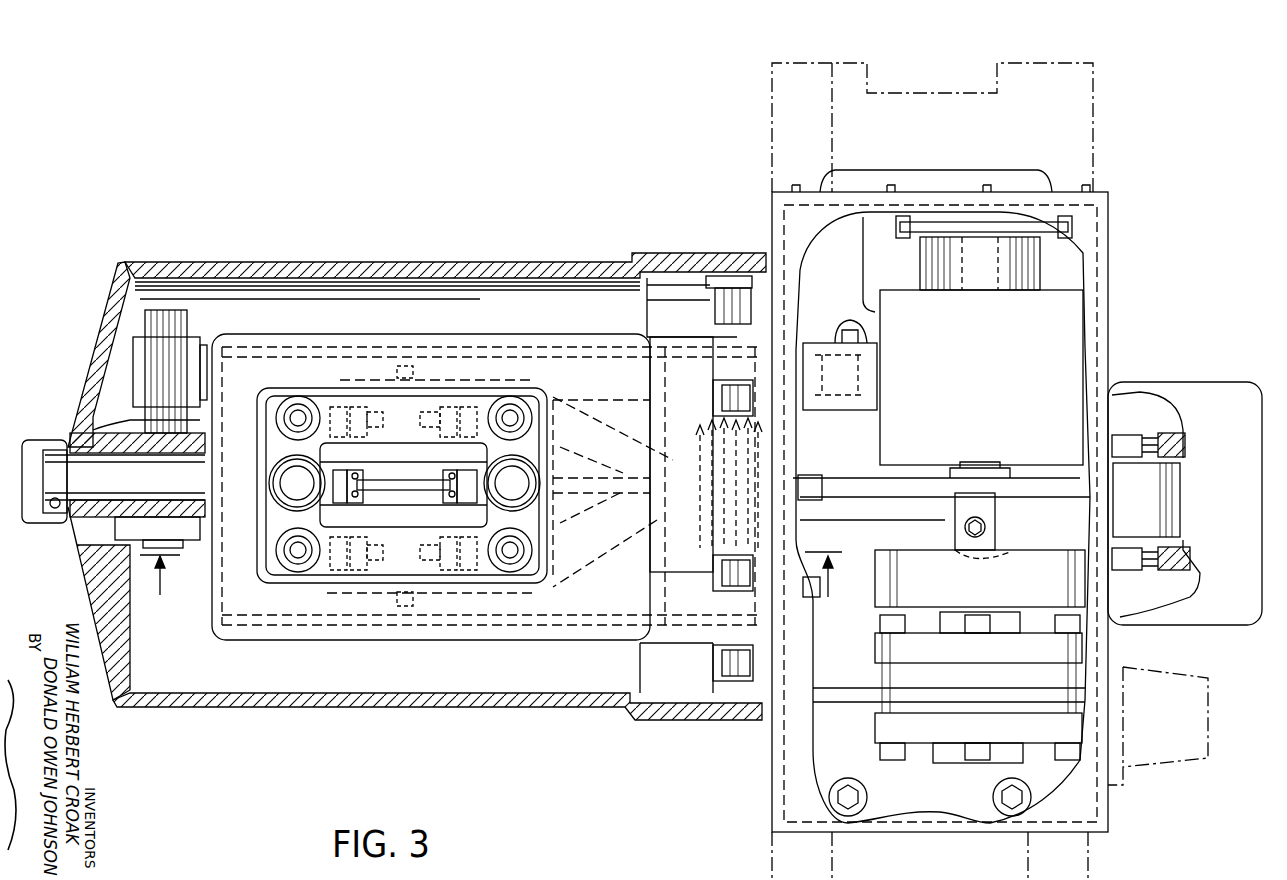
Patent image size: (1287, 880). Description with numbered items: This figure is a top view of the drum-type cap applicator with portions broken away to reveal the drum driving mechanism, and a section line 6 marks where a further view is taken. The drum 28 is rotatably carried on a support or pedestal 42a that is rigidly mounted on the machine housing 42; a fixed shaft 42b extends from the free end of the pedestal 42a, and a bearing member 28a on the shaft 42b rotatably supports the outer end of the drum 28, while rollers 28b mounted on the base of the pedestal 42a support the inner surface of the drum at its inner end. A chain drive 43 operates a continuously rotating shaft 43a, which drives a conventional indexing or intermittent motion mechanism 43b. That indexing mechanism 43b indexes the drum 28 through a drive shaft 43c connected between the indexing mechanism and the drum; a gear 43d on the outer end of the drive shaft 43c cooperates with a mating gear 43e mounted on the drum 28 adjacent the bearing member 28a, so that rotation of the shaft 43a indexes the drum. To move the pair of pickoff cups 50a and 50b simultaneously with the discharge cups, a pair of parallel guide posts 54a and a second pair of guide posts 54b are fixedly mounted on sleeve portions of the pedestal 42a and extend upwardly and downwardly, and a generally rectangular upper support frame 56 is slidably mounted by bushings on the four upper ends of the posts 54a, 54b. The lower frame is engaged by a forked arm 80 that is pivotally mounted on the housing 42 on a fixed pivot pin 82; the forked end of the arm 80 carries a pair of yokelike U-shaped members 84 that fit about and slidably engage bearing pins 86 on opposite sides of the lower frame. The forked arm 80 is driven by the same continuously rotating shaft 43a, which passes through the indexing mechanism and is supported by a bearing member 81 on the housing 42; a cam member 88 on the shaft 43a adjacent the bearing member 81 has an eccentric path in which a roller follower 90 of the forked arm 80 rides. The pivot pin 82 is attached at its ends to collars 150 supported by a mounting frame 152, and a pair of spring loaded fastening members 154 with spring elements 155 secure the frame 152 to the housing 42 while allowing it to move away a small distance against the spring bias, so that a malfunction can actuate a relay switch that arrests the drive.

The drum 28 is at (265, 262).
The bearing member 28a is at (182, 461).
The rollers 28b is at (722, 315).
The machine housing 42 is at (1112, 270).
The support or pedestal 42a is at (292, 641).
The fixed shaft 42b is at (83, 477).
The chain drive 43 is at (1072, 237).
The continuously rotating shaft 43a is at (988, 222).
The indexing or intermittent motion mechanism 43b is at (1072, 341).
The drive shaft 43c is at (505, 357).
The gear 43d is at (188, 330).
The mating gear 43e is at (148, 433).
The pickoff cup 50a is at (523, 504).
The pickoff cup 50b is at (281, 502).
The parallel guide posts 54a is at (532, 420).
The parallel guide posts 54b is at (296, 416).
The upper support frame 56 is at (495, 388).
The forked arm 80 is at (610, 433).
The bearing member 81 is at (1102, 680).
The fixed pivot pin 82 is at (1182, 472).
The yokelike U-shaped members 84 is at (345, 380).
The bearing pins 86 is at (415, 372).
The cam member 88 is at (1070, 593).
The follower 90 is at (1000, 560).
The collars 150 is at (1153, 433).
The mounting frame 152 is at (1190, 446).
The spring loaded fastening members 154 is at (1123, 437).
The spring elements 155 is at (1148, 430).
The section line 6 is at (491, 592).